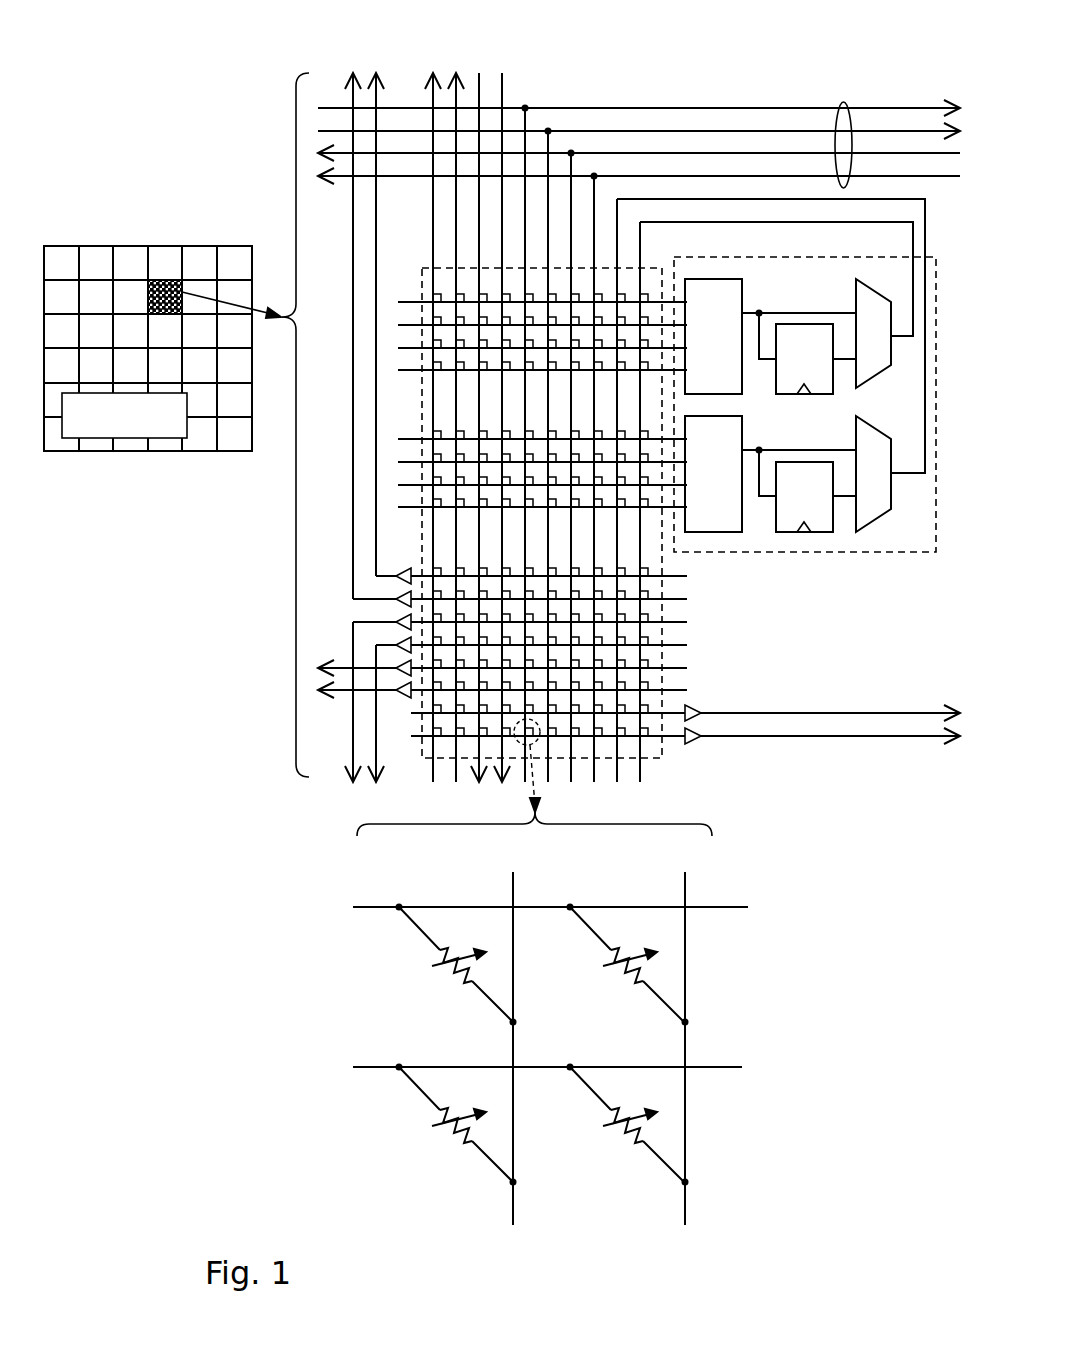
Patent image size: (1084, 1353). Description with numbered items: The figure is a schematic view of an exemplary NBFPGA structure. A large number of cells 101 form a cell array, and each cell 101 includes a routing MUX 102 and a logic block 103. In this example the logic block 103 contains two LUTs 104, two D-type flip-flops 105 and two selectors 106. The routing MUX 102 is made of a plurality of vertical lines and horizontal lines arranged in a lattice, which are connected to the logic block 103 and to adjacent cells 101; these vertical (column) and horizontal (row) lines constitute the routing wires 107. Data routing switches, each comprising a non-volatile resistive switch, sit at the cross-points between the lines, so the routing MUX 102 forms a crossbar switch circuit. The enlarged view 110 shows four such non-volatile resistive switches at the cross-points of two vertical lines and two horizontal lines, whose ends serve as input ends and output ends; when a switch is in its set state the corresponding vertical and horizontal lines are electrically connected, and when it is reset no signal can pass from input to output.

The cell 101 is at (65, 249).
The routing MUX 102 is at (652, 268).
The logic block 103 is at (776, 406).
The LUT 104 is at (737, 295).
The D-type flip-flop 105 is at (790, 395).
The selector 106 is at (866, 381).
The routing wires 107 is at (843, 102).
The enlarged view 110 is at (279, 882).